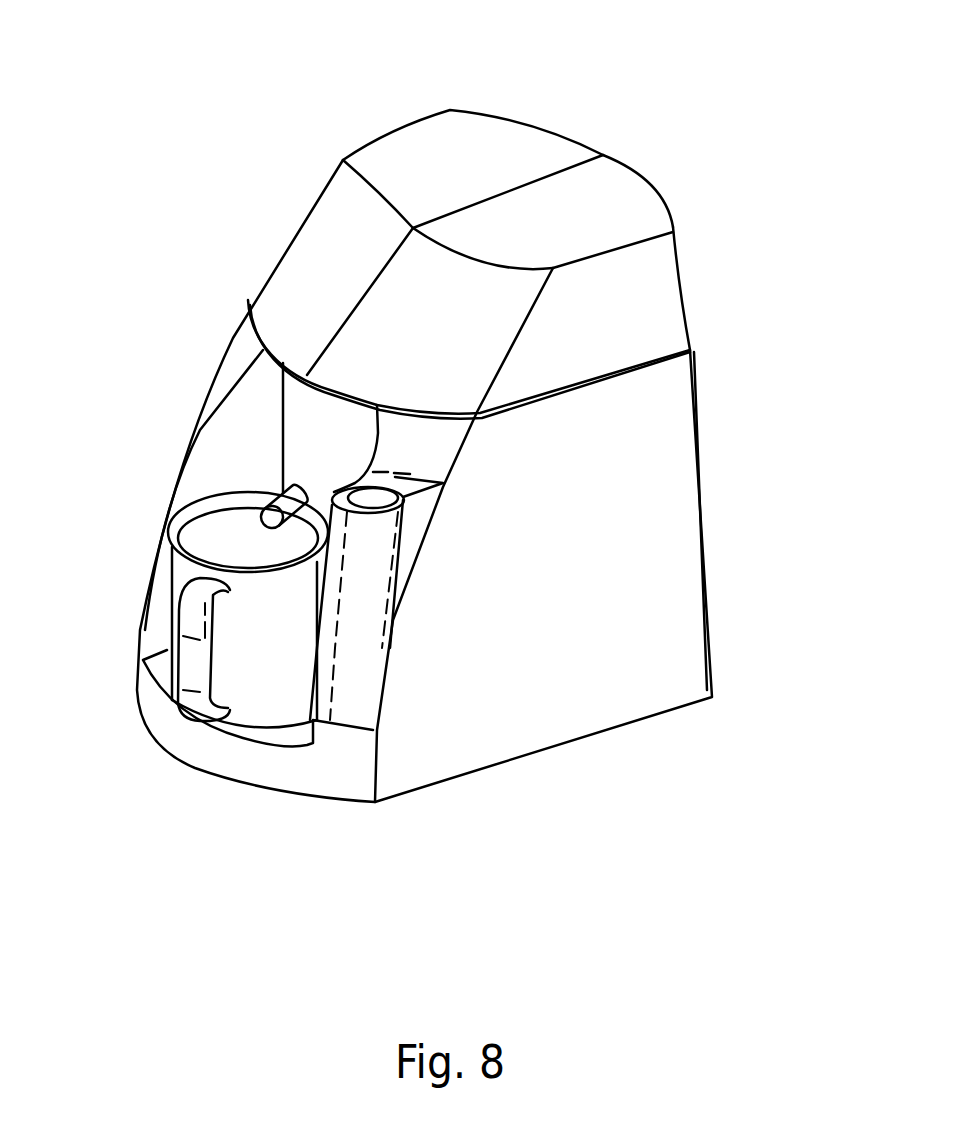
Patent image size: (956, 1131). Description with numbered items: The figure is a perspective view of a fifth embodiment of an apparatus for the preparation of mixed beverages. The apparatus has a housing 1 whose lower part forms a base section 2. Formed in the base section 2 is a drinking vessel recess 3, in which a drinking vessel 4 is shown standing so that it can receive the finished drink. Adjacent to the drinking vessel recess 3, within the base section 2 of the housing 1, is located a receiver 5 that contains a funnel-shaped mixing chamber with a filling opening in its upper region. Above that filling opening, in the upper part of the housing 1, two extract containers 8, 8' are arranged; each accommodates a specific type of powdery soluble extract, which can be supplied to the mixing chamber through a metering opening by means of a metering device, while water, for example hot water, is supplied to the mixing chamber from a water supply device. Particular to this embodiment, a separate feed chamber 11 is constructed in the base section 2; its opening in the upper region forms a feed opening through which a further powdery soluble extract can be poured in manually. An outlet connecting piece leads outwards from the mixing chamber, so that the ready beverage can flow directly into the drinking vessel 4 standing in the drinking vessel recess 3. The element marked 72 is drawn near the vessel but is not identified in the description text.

The housing 1 is at (240, 213).
The base section 2 is at (657, 617).
The drinking vessel recess 3 is at (225, 453).
The drinking vessel 4 is at (180, 583).
The receiver 5 is at (303, 408).
The extract container 8 is at (455, 199).
The extract container 8' is at (631, 176).
The feed chamber 11 is at (370, 503).
The outlet nozzle 72 is at (178, 512).